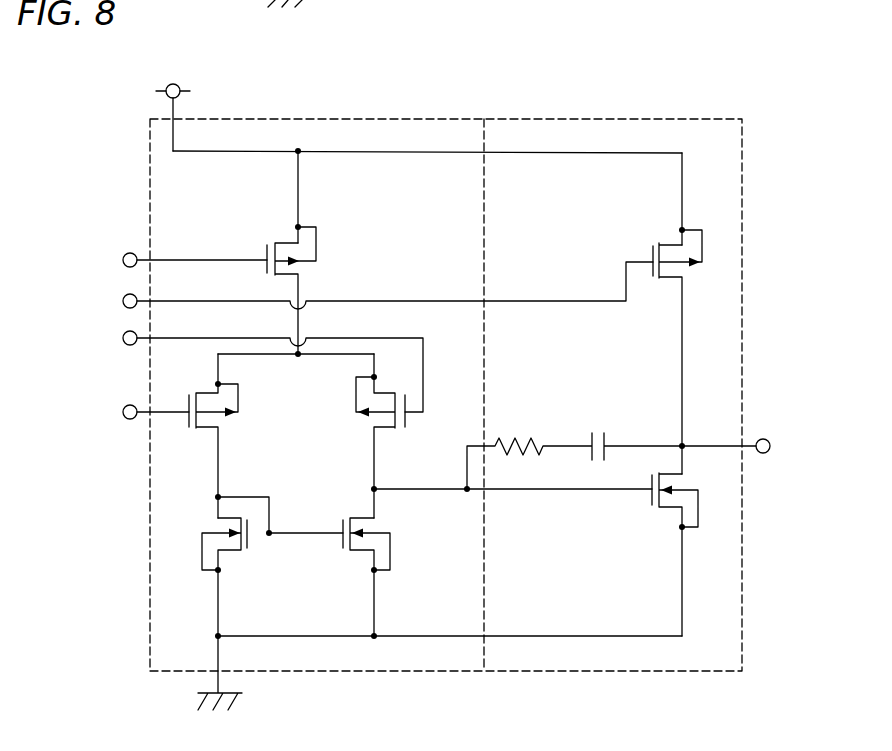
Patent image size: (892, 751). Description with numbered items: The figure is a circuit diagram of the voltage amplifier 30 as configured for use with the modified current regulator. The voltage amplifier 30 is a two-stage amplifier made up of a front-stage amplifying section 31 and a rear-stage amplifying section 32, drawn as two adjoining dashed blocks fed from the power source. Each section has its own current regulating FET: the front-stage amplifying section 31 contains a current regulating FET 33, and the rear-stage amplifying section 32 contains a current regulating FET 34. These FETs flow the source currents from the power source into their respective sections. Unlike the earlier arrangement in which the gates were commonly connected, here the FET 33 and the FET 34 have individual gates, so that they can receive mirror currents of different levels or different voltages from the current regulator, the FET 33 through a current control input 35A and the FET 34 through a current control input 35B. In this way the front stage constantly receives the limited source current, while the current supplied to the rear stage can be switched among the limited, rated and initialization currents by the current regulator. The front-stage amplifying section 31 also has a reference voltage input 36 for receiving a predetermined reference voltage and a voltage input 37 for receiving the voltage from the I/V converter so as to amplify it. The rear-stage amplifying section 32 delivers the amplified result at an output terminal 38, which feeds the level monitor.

The voltage amplifier 30 is at (742, 116).
The front-stage amplifying section 31 is at (344, 118).
The rear-stage amplifying section 32 is at (590, 118).
The current regulating FET 33 is at (277, 226).
The current regulating FET 34 is at (663, 228).
The current control input 35A is at (118, 257).
The current control input 35B is at (118, 300).
The reference voltage input 36 is at (124, 420).
The voltage input 37 is at (124, 347).
The output terminal 38 is at (768, 440).